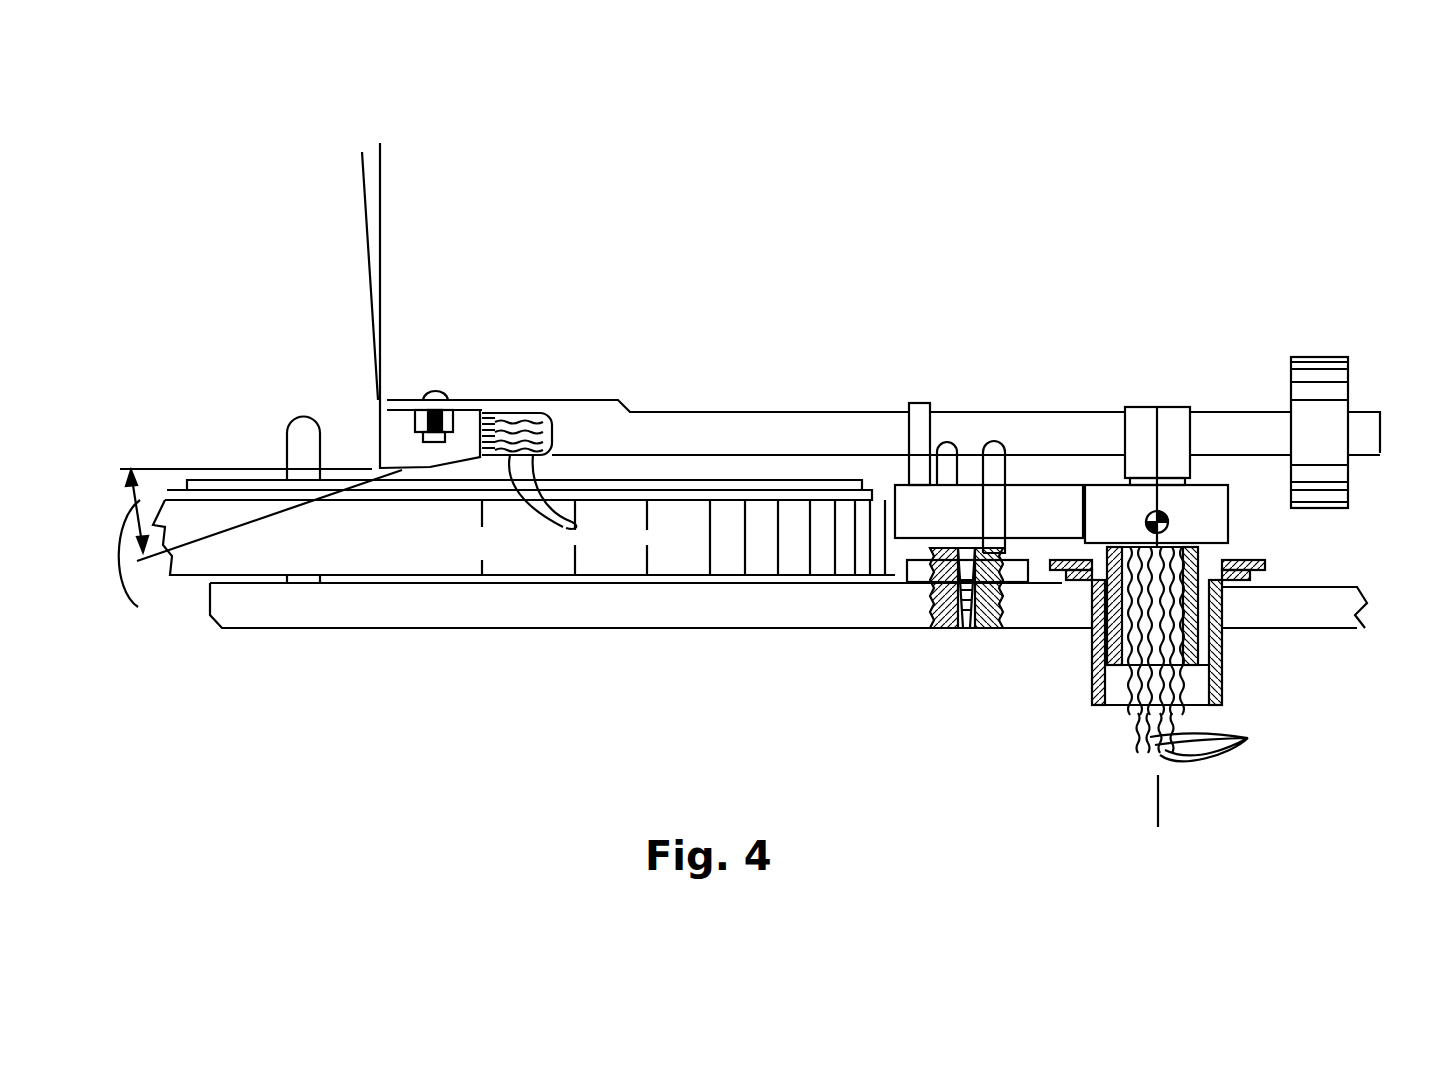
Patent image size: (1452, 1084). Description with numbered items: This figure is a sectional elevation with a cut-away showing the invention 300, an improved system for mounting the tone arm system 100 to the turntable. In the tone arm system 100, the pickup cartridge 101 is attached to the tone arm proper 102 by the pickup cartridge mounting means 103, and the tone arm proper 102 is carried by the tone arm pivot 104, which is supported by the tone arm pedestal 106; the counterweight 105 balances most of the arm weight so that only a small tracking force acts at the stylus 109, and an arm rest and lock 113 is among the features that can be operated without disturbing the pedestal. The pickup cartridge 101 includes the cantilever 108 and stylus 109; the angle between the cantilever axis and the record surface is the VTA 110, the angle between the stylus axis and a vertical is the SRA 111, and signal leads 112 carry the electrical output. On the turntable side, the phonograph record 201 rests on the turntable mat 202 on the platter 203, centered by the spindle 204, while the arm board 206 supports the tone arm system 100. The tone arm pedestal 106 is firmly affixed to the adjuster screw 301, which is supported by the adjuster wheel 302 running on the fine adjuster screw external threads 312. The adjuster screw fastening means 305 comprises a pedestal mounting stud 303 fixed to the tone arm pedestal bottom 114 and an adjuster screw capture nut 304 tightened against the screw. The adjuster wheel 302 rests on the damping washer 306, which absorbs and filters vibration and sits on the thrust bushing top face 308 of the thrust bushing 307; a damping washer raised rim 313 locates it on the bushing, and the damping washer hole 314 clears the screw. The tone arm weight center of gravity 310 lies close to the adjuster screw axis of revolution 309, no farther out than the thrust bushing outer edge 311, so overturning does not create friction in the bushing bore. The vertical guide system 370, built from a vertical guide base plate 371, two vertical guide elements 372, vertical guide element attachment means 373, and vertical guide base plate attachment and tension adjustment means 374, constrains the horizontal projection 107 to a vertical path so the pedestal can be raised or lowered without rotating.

The tone arm system 100 is at (1390, 433).
The pickup cartridge 101 is at (376, 430).
The tone arm proper 102 is at (880, 412).
The pickup cartridge mounting means 103 is at (428, 393).
The tone arm pivot 104 is at (1163, 420).
The counterweight 105 is at (1320, 362).
The tone arm pedestal 106 is at (1156, 514).
The horizontal projection 107 is at (989, 511).
The cantilever 108 is at (408, 470).
The stylus 109 is at (398, 472).
The VTA 110 is at (159, 545).
The SRA 111 is at (352, 161).
The signal leads 112 is at (500, 418).
The arm rest and lock 113 is at (918, 403).
The tone arm pedestal bottom 114 is at (1232, 540).
The phonograph record 201 is at (242, 488).
The turntable mat 202 is at (176, 488).
The platter 203 is at (200, 585).
The spindle 204 is at (298, 418).
The arm board 206 is at (270, 623).
The invention 300 is at (778, 707).
The adjuster screw 301 is at (1242, 561).
The adjuster wheel 302 is at (1250, 575).
The pedestal mounting stud 303 is at (1108, 660).
The adjuster screw capture nut 304 is at (1115, 705).
The adjuster screw fastening means 305 is at (1095, 772).
The damping washer 306 is at (1095, 578).
The thrust bushing 307 is at (1225, 700).
The thrust bushing top face 308 is at (1225, 600).
The adjuster screw axis of revolution 309 is at (1160, 810).
The tone arm weight center of gravity 310 is at (1165, 520).
The thrust bushing outer edge 311 is at (1072, 583).
The adjuster screw external threads 312 is at (1090, 556).
The damping washer raised rim 313 is at (1262, 590).
The damping washer hole 314 is at (1225, 645).
The vertical guide system 370 is at (885, 548).
The vertical guide base plate 371 is at (915, 548).
The vertical guide elements 372 is at (1000, 465).
The vertical guide element attachment means 373 is at (995, 442).
The vertical guide base plate attachment and tension adjustment means 374 is at (960, 590).